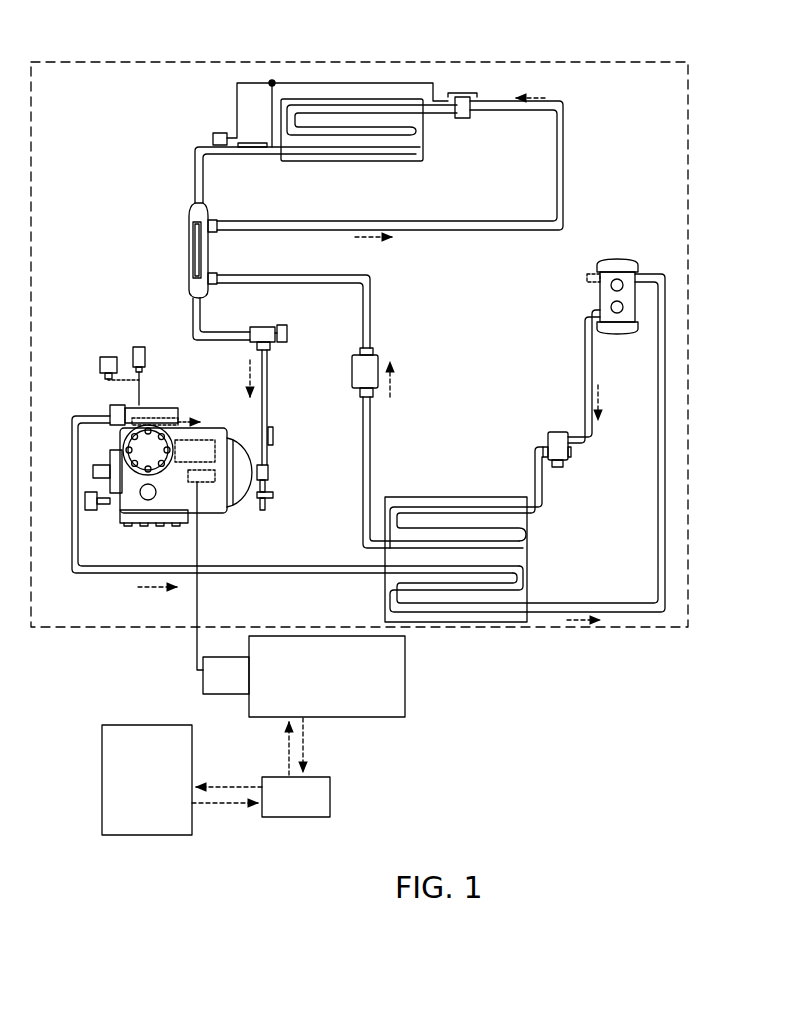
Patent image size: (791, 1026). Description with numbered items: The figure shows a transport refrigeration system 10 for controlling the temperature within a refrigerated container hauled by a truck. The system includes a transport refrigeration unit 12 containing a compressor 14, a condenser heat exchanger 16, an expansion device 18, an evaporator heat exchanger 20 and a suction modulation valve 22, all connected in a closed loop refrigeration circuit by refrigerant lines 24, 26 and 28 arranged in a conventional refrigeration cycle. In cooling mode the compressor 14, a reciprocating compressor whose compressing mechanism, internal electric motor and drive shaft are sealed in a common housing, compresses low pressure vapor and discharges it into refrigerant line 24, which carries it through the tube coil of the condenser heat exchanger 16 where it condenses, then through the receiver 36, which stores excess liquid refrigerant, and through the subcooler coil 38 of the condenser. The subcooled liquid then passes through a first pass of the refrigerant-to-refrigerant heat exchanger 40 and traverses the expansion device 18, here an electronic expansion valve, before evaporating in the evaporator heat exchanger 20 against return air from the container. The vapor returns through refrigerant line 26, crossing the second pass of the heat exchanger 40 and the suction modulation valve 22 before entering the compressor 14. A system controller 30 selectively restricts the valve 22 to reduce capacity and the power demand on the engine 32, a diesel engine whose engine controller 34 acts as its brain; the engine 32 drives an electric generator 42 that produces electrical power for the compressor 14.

The transport refrigeration system 10 is at (531, 665).
The transport refrigeration unit 12 is at (147, 62).
The compressor 14 is at (223, 513).
The condenser heat exchanger 16 is at (527, 580).
The expansion device 18 is at (470, 104).
The evaporator heat exchanger 20 is at (418, 142).
The suction modulation valve 22 is at (268, 325).
The refrigerant line 24 is at (320, 565).
The refrigerant line 26 is at (372, 325).
The refrigerant line 28 is at (195, 190).
The system controller 30 is at (160, 835).
The engine 32 is at (340, 717).
The engine controller 34 is at (330, 798).
The receiver 36 is at (613, 333).
The subcooler coil 38 is at (443, 507).
The refrigerant-to-refrigerant heat exchanger 40 is at (210, 251).
The electric generator 42 is at (210, 694).